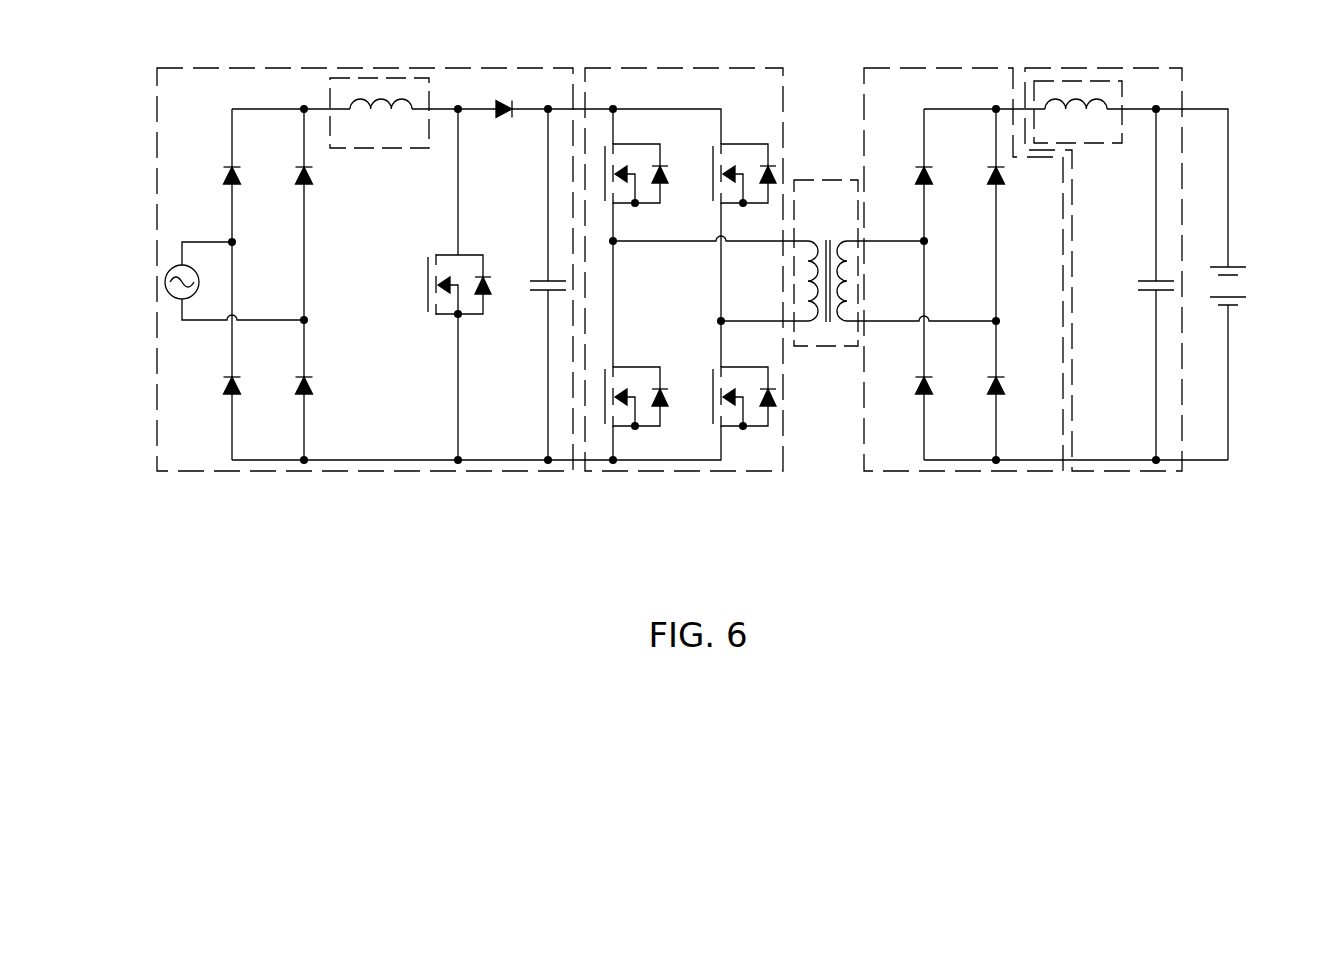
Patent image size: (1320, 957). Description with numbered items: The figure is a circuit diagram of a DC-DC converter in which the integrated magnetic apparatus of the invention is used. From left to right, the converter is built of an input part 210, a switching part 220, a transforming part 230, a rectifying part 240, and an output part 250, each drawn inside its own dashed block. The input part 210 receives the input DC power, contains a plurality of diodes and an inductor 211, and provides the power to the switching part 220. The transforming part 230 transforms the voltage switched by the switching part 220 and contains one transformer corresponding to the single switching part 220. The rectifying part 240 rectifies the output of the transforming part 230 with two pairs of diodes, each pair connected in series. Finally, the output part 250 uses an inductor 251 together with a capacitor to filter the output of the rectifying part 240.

The input part 210 is at (523, 68).
The inductor 211 is at (412, 78).
The switching part 220 is at (733, 68).
The transforming part 230 is at (843, 180).
The rectifying part 240 is at (972, 68).
The output part 250 is at (1172, 68).
The inductor 251 is at (1107, 81).